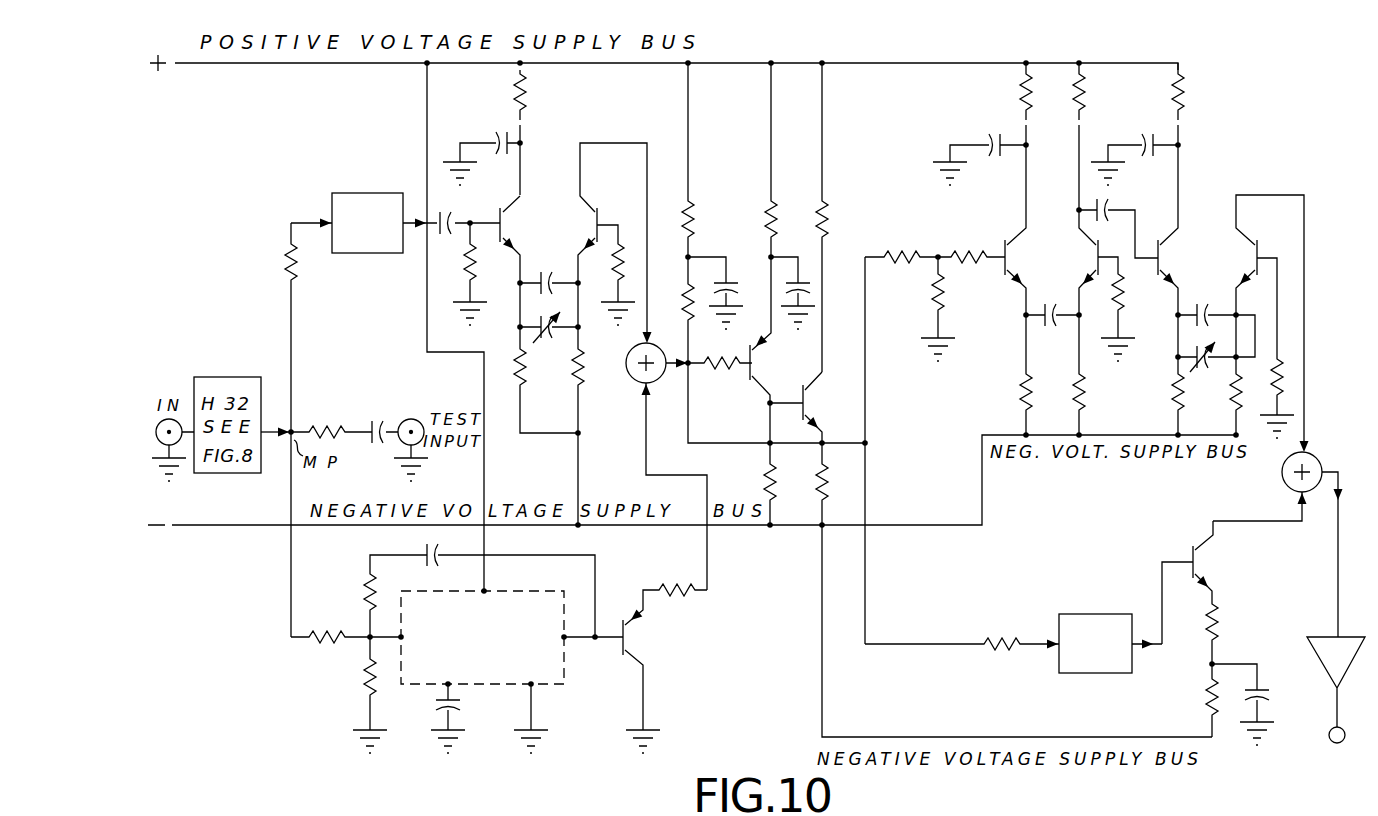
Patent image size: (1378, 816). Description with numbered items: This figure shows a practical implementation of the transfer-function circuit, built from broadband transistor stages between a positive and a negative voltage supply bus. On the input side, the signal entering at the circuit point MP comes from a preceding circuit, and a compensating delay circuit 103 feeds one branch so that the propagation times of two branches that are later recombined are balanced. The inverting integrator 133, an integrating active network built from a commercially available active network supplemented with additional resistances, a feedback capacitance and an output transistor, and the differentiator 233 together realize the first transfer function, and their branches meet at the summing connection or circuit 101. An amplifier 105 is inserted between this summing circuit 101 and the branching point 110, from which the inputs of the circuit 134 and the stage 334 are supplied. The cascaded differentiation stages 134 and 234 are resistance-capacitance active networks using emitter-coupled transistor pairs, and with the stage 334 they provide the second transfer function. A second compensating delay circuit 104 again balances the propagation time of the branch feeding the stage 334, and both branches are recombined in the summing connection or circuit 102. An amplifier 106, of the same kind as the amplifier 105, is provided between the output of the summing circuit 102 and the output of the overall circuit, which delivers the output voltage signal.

The summing connection or circuit 101 is at (638, 385).
The summing connection or circuit 102 is at (1287, 483).
The compensating delay circuit 103 is at (363, 193).
The compensating delay circuit 104 is at (1067, 614).
The amplifier 105 is at (801, 373).
The amplifier 106 is at (1323, 637).
The branching point 110 is at (868, 443).
The inverting integrator 133 is at (557, 642).
The differentiation stage 134 is at (1065, 265).
The differentiator 233 is at (572, 238).
The differentiation stage 234 is at (1227, 265).
The stage 334 is at (1153, 567).